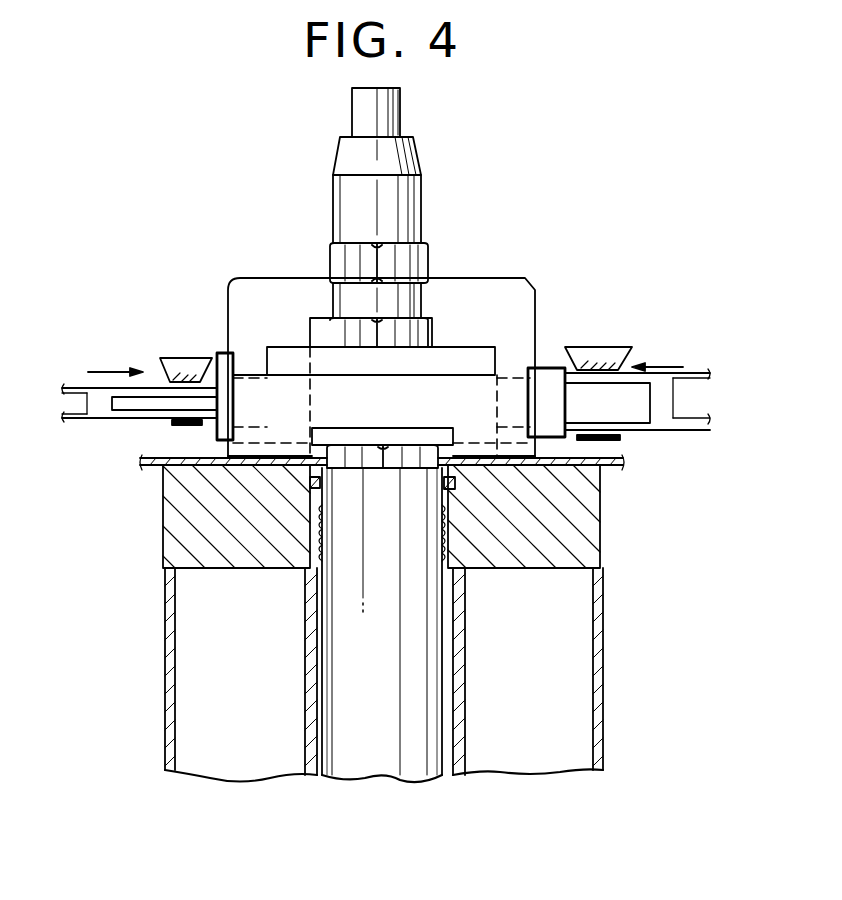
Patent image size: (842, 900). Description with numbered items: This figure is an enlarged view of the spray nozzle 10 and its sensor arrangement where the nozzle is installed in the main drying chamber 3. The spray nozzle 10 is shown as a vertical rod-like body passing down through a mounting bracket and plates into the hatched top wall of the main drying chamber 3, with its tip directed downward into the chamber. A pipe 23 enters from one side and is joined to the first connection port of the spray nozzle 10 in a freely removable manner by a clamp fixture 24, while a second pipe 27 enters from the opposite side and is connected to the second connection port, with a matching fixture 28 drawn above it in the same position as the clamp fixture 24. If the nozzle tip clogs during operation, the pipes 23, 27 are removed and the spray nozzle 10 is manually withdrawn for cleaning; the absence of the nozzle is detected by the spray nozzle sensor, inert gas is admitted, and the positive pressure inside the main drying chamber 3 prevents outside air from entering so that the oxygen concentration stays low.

The main drying chamber 3 is at (600, 538).
The spray nozzle 10 is at (425, 215).
The pipe 23 is at (100, 410).
The clamp fixture 24 is at (177, 358).
The pipe 27 is at (663, 430).
The hopper 28 is at (615, 347).